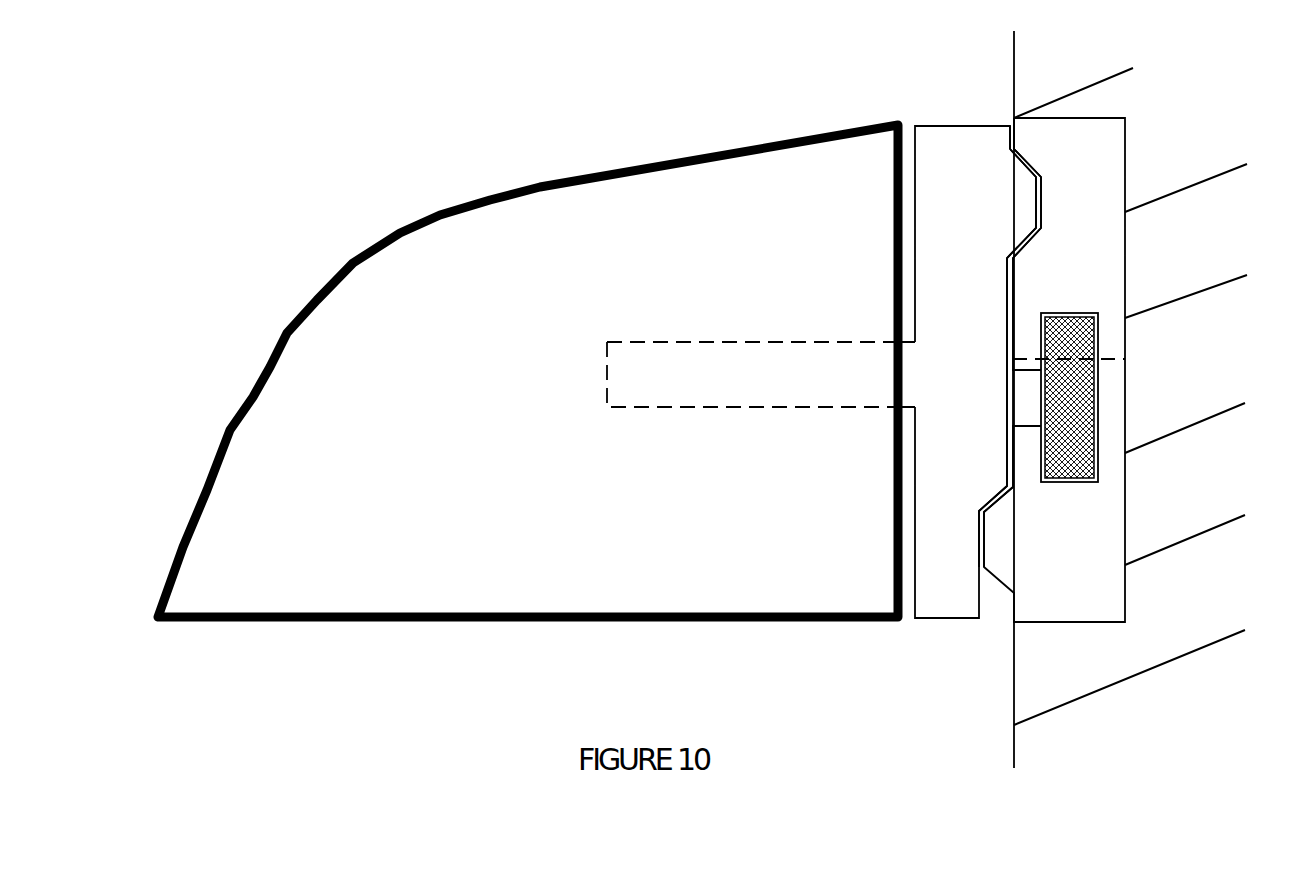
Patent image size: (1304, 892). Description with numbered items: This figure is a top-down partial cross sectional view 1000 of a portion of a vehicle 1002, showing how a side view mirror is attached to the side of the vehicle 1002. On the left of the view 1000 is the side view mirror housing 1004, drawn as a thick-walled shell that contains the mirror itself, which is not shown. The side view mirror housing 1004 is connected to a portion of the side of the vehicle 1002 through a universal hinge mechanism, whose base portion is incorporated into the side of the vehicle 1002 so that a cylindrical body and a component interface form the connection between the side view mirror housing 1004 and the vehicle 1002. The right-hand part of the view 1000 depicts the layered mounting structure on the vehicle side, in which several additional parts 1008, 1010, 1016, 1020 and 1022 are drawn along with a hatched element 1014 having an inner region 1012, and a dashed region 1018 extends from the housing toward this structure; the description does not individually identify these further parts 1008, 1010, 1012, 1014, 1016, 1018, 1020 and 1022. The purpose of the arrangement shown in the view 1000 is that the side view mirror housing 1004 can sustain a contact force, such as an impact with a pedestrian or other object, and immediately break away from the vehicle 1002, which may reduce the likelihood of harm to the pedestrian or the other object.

The top-down partial cross sectional view 1000 is at (702, 399).
The vehicle 1002 is at (1118, 399).
The side view mirror housing 1004 is at (250, 397).
The substrate block 1008 is at (1125, 268).
The bonding layer 1010 is at (1027, 157).
The conductive core 1012 is at (1098, 472).
The antenna element 1014 is at (1137, 397).
The layer upper end 1016 is at (1014, 133).
The cavity 1018 is at (607, 342).
The housing body 1020 is at (987, 533).
The centerline 1022 is at (1125, 359).